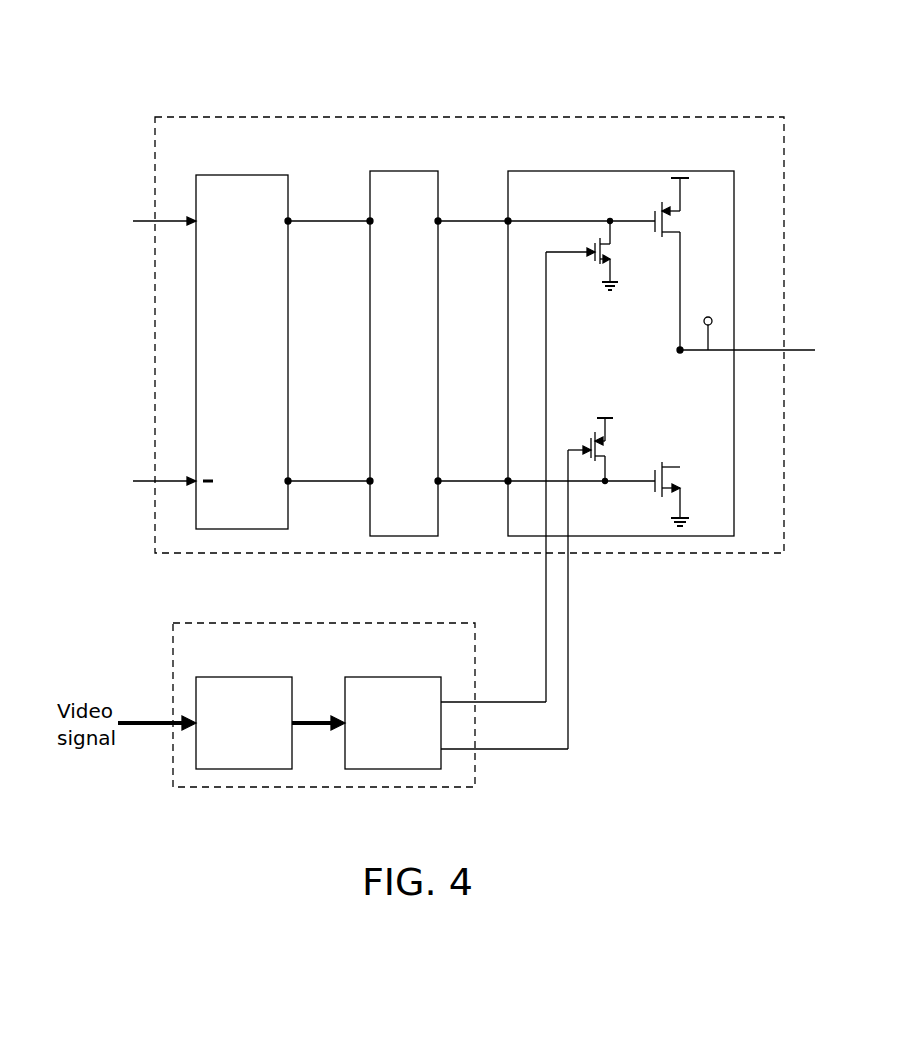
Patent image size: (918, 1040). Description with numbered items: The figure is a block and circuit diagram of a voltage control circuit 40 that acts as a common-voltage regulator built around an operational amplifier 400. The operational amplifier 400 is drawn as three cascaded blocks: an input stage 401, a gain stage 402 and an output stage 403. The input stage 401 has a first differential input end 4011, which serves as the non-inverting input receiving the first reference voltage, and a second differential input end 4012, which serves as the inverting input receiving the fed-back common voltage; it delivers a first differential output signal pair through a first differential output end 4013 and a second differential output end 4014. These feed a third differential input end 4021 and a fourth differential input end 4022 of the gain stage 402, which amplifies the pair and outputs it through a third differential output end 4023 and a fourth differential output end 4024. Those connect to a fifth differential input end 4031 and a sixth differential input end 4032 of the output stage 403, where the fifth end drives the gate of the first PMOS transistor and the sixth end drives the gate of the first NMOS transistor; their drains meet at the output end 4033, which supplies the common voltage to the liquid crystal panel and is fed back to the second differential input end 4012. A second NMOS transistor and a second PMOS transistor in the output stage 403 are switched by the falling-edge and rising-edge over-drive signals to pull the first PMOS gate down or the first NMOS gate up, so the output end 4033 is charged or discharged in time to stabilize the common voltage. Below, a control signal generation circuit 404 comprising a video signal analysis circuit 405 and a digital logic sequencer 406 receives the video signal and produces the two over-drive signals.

The voltage control circuit 40 is at (459, 31).
The operational amplifier 400 is at (524, 117).
The input stage 401 is at (238, 175).
The gain stage 402 is at (405, 171).
The output stage 403 is at (618, 171).
The control signal generation circuit 404 is at (447, 623).
The video signal analysis circuit 405 is at (245, 677).
The digital logic sequencer 406 is at (393, 677).
The first differential input end 4011 is at (194, 220).
The second differential input end 4012 is at (194, 480).
The first differential output end 4013 is at (290, 219).
The second differential output end 4014 is at (290, 479).
The third differential input end 4021 is at (368, 219).
The fourth differential input end 4022 is at (368, 479).
The third differential output end 4023 is at (440, 219).
The fourth differential output end 4024 is at (440, 479).
The fifth differential input end 4031 is at (506, 219).
The sixth differential input end 4032 is at (506, 479).
The output end 4033 is at (736, 349).